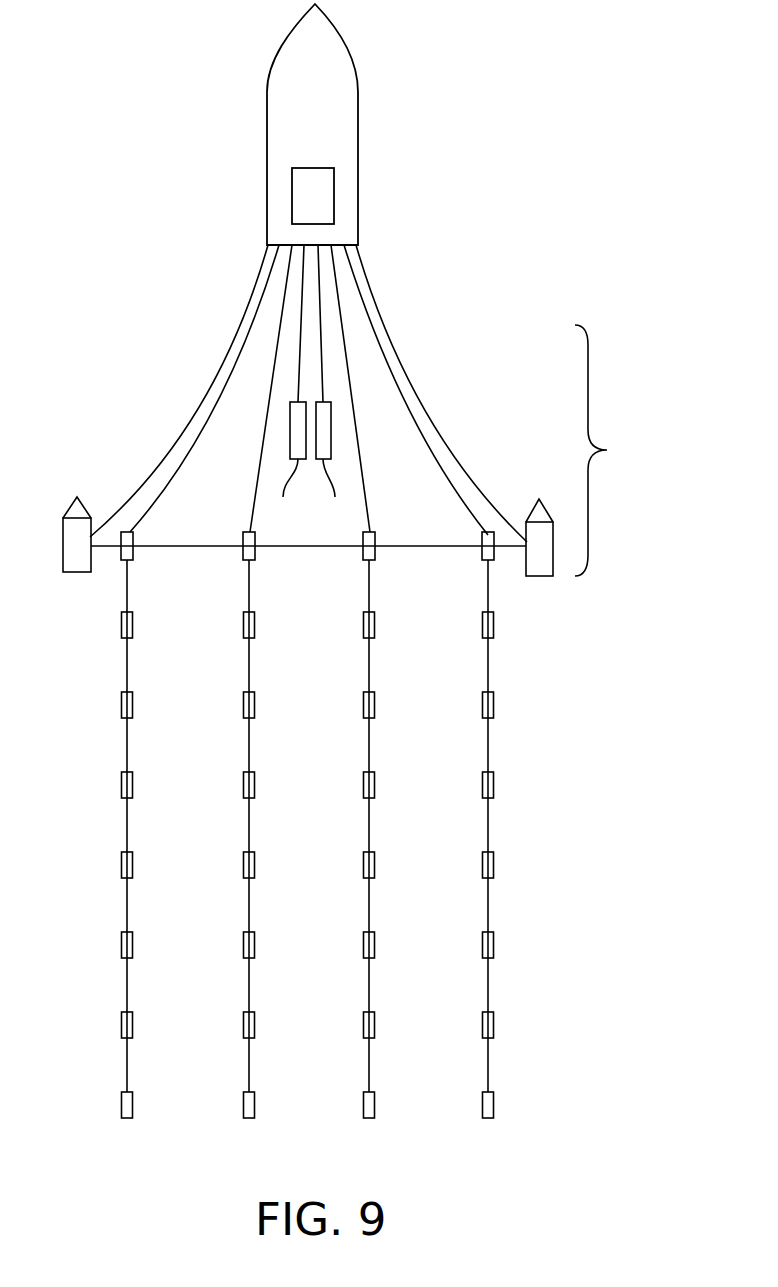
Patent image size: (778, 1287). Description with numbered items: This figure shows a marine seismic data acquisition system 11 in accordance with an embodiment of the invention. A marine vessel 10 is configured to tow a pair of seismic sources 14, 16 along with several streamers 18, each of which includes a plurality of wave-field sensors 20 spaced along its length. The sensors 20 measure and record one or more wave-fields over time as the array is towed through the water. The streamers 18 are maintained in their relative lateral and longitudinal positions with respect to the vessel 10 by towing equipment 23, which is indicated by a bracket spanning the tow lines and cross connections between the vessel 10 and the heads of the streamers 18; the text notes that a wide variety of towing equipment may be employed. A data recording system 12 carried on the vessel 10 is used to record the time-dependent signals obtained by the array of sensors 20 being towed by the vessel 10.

The marine vessel 10 is at (359, 110).
The seismic data acquisition system 11 is at (672, 736).
The data recording system 12 is at (313, 195).
The seismic source 14 is at (288, 390).
The seismic source 16 is at (335, 390).
The streamer 18 is at (127, 583).
The wave-field sensor 20 is at (121, 628).
The towing equipment 23 is at (607, 450).